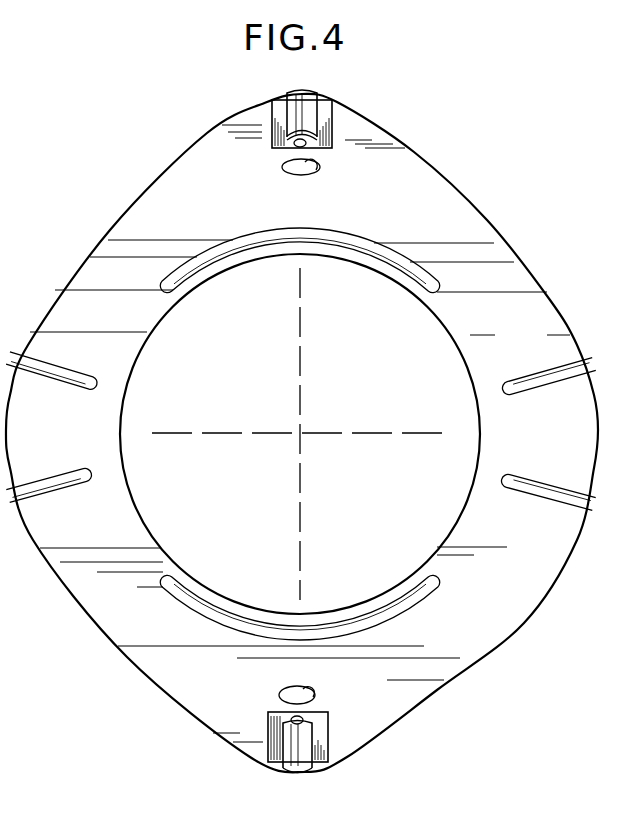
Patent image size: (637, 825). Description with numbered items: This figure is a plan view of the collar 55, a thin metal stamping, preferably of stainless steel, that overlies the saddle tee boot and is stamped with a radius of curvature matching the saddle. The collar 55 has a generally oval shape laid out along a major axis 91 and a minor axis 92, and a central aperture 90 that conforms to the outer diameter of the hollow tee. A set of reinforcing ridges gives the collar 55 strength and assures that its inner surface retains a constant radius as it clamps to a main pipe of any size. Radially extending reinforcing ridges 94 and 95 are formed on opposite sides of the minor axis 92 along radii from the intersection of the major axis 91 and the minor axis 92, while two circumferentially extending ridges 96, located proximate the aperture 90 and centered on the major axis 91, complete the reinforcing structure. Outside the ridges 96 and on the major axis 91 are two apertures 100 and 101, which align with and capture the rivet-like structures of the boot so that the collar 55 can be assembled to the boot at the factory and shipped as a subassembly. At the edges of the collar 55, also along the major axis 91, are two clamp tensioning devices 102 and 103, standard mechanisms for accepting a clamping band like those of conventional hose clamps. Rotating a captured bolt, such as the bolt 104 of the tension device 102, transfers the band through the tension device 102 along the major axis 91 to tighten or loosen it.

The collar 55 is at (127, 657).
The aperture 90 is at (151, 529).
The major axis 91 is at (300, 415).
The minor axis 92 is at (330, 433).
The radially extending reinforcing ridge 94 is at (67, 373).
The radially extending reinforcing ridge 95 is at (67, 477).
The circumferentially extending ridge 96 is at (403, 276).
The aperture 100 is at (318, 171).
The aperture 101 is at (315, 696).
The clamp tensioning device 102 is at (323, 115).
The clamp tensioning device 103 is at (313, 742).
The bolt 104 is at (297, 150).